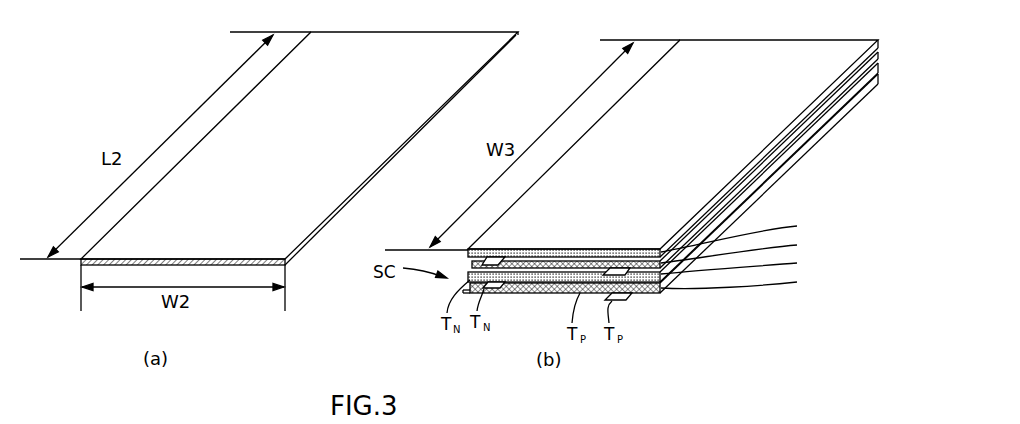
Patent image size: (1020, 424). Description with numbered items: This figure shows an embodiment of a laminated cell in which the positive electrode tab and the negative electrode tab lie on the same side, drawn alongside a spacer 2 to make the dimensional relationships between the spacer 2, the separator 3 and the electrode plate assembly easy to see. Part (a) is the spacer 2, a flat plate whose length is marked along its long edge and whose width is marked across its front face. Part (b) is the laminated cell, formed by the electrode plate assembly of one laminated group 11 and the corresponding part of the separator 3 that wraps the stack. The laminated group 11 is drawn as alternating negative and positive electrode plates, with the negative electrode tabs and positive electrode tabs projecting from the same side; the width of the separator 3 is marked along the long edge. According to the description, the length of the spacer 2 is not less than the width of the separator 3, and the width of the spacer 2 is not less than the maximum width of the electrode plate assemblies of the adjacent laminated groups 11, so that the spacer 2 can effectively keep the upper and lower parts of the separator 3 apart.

The spacer 2 is at (127, 93).
The separator 3 is at (578, 250).
The laminated group 11 is at (821, 291).